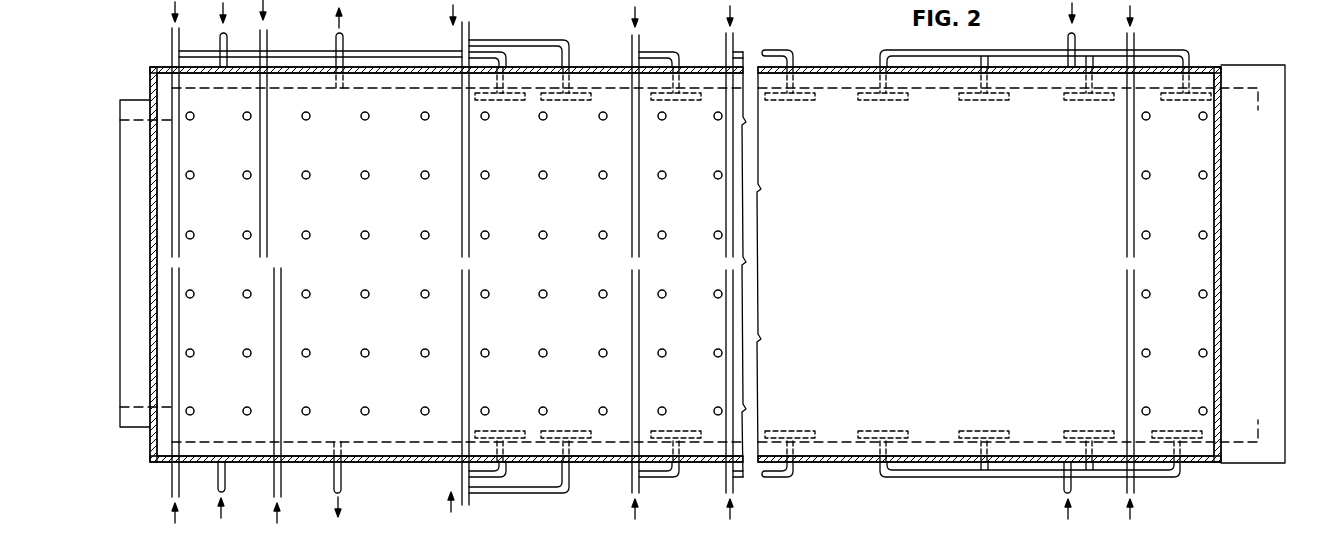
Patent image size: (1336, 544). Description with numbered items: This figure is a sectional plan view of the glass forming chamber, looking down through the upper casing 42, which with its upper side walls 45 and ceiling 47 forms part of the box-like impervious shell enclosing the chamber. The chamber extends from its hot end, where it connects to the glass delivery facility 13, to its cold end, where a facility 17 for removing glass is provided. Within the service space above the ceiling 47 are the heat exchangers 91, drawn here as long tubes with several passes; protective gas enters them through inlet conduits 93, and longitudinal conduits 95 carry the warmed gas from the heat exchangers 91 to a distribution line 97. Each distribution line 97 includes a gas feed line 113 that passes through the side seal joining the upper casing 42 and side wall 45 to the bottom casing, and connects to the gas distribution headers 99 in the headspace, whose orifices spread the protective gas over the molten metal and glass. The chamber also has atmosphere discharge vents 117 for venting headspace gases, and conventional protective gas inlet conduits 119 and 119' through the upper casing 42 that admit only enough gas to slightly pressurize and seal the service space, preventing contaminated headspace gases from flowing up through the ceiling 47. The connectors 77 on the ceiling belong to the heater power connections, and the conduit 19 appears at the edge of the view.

The glass delivery facility 13 is at (123, 88).
The facility for removing glass 17 is at (827, 50).
The conduit 19 is at (45, 9).
The upper casing 42 is at (163, 66).
The upper side walls 45 is at (1040, 100).
The ceiling 47 is at (529, 221).
The connectors 77 is at (361, 173).
The heat exchangers 91 is at (268, 204).
The inlet conduits 93 is at (268, 37).
The longitudinal conduits 95 is at (362, 50).
The distribution line 97 is at (796, 476).
The gas distribution headers 99 is at (806, 103).
The gas feed line 113 is at (573, 56).
The atmosphere discharge outlets or vents 117 is at (343, 34).
The protective gas inlet conduits 119 is at (229, 260).
The stub tube 119' is at (1075, 261).